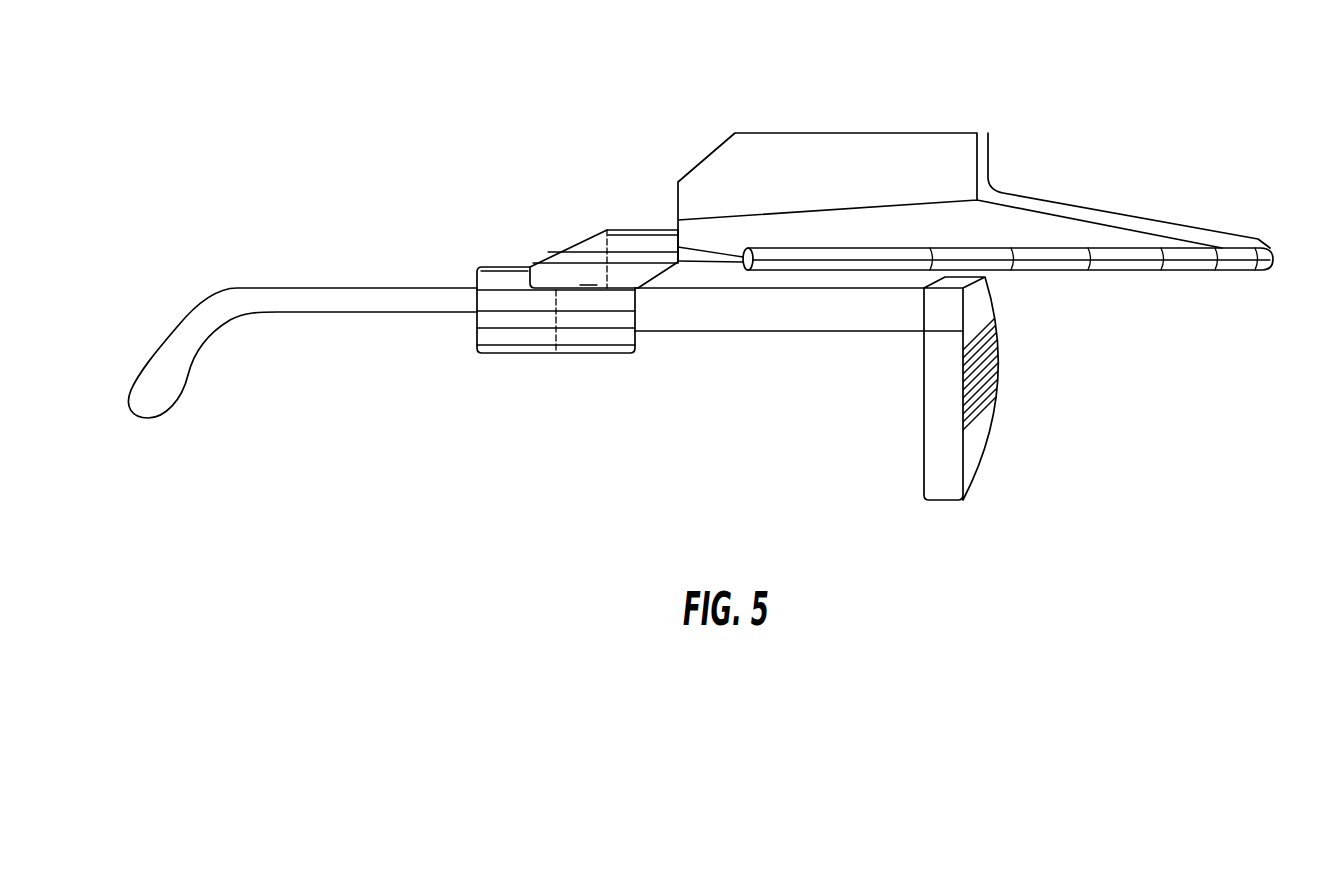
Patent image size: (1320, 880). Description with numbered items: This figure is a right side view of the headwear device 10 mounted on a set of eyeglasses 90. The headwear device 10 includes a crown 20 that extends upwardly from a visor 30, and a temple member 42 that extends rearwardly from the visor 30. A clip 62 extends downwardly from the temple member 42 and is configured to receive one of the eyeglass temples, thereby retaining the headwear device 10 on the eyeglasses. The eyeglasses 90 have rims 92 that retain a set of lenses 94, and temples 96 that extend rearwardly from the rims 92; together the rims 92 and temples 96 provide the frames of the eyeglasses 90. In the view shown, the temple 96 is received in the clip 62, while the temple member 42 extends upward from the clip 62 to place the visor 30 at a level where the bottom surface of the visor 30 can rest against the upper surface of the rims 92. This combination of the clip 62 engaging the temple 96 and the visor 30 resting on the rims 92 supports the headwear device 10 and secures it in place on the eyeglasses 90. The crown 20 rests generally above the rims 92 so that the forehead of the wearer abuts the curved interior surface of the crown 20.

The headwear device 10 is at (1006, 118).
The crown 20 is at (840, 163).
The visor 30 is at (1167, 248).
The temple member 42 is at (627, 247).
The clip 62 is at (518, 337).
The eyeglasses 90 is at (1005, 497).
The rims 92 is at (935, 457).
The lenses 94 is at (998, 378).
The temples 96 is at (290, 298).